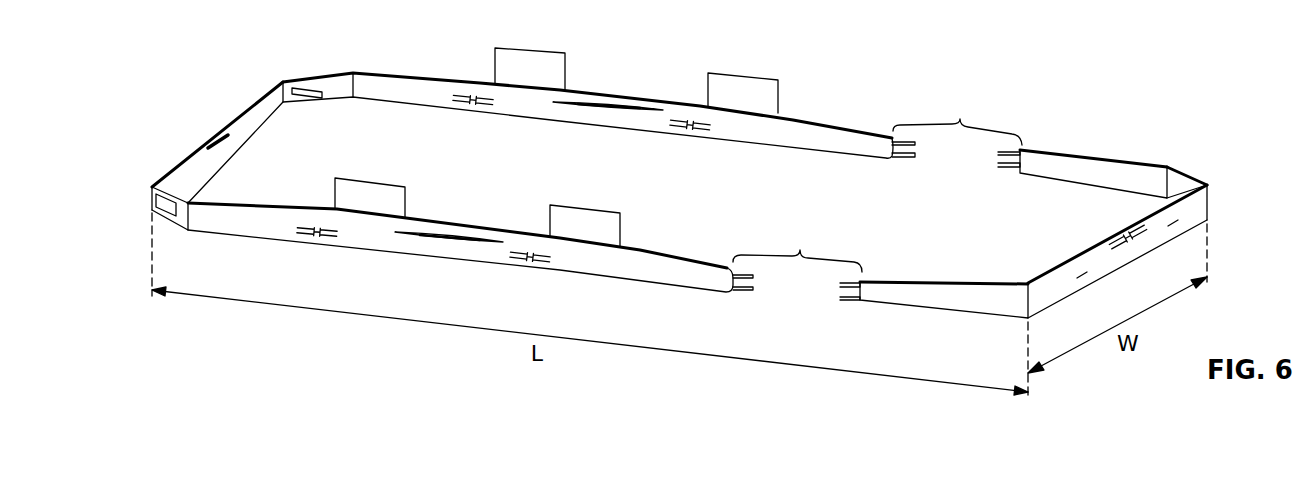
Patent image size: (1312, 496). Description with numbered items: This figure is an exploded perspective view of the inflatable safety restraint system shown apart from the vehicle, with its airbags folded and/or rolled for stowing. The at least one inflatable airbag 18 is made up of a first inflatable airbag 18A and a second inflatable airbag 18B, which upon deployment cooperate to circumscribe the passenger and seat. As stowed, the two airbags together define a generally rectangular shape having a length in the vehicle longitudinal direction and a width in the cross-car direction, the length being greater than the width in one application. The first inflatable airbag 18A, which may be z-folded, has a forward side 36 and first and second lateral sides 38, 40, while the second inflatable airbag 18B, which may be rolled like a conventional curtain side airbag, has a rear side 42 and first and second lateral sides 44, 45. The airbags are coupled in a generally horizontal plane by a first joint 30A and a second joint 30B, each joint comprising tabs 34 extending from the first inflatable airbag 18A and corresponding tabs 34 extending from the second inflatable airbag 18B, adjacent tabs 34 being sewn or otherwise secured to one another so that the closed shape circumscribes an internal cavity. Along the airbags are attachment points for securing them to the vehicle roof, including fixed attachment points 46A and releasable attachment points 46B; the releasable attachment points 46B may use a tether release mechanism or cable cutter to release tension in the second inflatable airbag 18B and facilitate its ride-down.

The inflatable airbag 18 is at (400, 62).
The first inflatable airbag 18A is at (1075, 155).
The second inflatable airbag 18B is at (407, 257).
The first joint 30A is at (957, 120).
The second joint 30B is at (797, 248).
The tab 34 is at (755, 288).
The forward side 36 is at (1108, 260).
The first lateral side 38 is at (927, 297).
The second lateral side 40 is at (1143, 177).
The rear side 42 is at (230, 123).
The first lateral side 44 is at (543, 270).
The second lateral side 45 is at (587, 118).
The fixed attachment point 46A is at (522, 65).
The releasable attachment point 46B is at (755, 92).